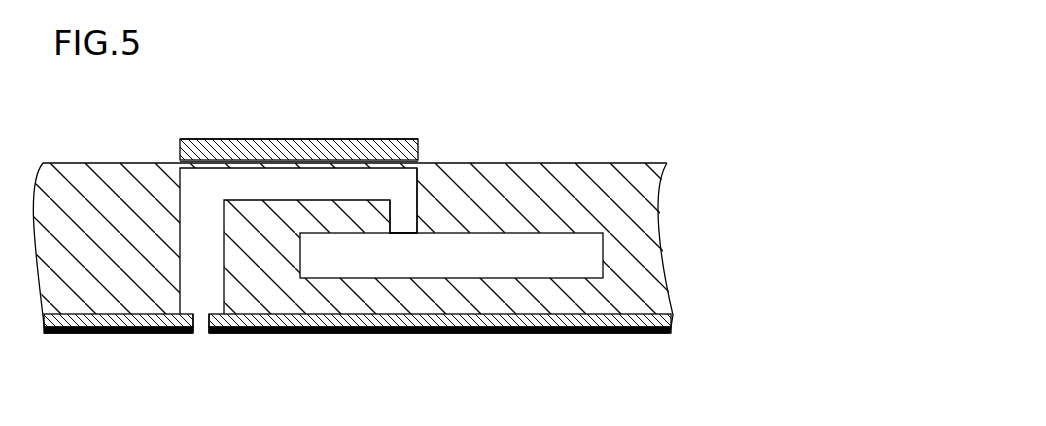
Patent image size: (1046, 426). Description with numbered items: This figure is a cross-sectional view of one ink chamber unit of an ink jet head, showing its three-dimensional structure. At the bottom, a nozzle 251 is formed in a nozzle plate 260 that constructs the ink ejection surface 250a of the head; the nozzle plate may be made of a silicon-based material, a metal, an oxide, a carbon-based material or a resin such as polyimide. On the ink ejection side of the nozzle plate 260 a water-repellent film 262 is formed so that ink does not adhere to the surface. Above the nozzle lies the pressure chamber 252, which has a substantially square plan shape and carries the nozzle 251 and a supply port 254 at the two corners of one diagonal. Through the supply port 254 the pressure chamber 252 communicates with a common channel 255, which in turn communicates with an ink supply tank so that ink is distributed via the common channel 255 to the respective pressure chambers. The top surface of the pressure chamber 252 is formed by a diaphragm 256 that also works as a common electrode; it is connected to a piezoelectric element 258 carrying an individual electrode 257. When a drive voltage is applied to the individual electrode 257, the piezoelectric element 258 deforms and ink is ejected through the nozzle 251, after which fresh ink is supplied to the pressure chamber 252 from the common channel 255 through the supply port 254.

The ink ejection surface 250a is at (522, 338).
The nozzle 251 is at (201, 336).
The pressure chamber 252 is at (265, 180).
The supply port 254 is at (403, 207).
The common channel 255 is at (517, 245).
The diaphragm 256 is at (345, 166).
The individual electrode 257 is at (317, 140).
The piezoelectric element 258 is at (203, 139).
The nozzle plate 260 is at (672, 318).
The water-repellent film 262 is at (608, 335).